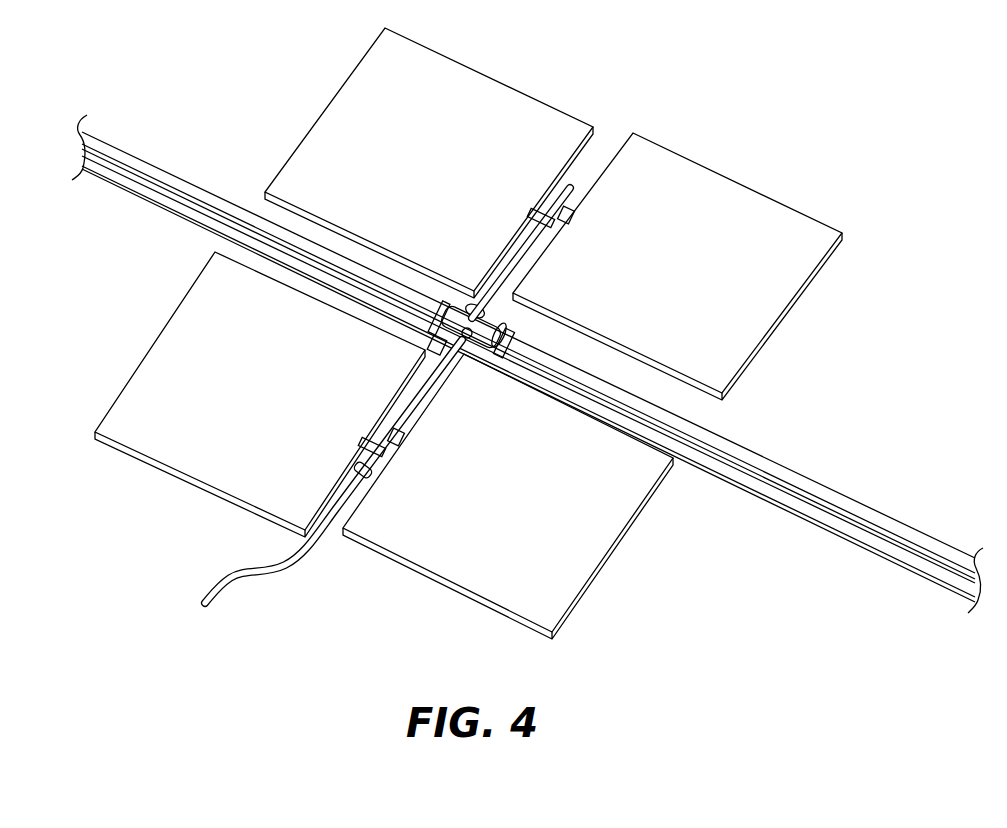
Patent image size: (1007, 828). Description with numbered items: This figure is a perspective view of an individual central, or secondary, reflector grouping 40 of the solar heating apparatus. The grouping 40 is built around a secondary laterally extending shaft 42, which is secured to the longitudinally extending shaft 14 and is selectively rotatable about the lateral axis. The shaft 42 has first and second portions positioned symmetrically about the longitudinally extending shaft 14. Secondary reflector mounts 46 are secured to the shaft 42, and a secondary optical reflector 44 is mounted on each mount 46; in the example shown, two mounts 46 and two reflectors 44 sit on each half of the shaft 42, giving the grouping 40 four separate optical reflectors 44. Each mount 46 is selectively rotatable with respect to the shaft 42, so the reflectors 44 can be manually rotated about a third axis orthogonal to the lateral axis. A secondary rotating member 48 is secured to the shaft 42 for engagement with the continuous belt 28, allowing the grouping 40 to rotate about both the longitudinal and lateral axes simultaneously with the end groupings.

The secondary reflector grouping 40 is at (665, 60).
The longitudinally extending shaft 14 is at (885, 527).
The continuous belt 28 is at (893, 563).
The secondary optical reflector 44 is at (473, 77).
The secondary reflector mount 46 is at (537, 213).
The secondary rotating member 48 is at (478, 352).
The secondary laterally extending shaft 42 is at (374, 407).